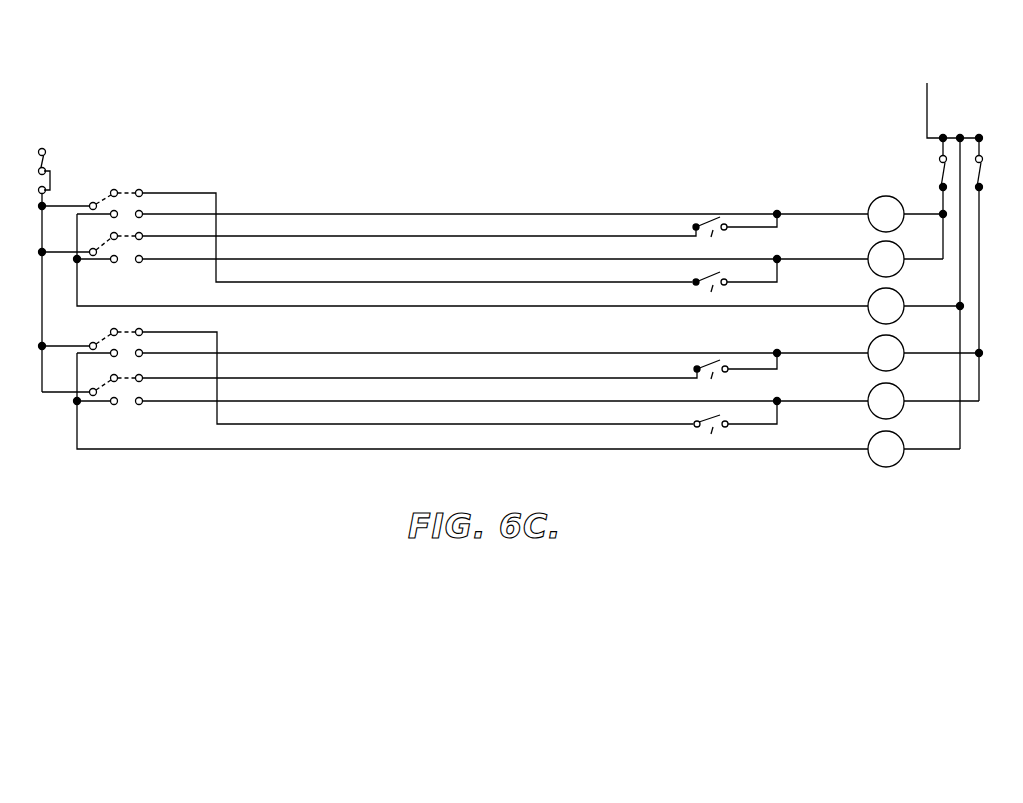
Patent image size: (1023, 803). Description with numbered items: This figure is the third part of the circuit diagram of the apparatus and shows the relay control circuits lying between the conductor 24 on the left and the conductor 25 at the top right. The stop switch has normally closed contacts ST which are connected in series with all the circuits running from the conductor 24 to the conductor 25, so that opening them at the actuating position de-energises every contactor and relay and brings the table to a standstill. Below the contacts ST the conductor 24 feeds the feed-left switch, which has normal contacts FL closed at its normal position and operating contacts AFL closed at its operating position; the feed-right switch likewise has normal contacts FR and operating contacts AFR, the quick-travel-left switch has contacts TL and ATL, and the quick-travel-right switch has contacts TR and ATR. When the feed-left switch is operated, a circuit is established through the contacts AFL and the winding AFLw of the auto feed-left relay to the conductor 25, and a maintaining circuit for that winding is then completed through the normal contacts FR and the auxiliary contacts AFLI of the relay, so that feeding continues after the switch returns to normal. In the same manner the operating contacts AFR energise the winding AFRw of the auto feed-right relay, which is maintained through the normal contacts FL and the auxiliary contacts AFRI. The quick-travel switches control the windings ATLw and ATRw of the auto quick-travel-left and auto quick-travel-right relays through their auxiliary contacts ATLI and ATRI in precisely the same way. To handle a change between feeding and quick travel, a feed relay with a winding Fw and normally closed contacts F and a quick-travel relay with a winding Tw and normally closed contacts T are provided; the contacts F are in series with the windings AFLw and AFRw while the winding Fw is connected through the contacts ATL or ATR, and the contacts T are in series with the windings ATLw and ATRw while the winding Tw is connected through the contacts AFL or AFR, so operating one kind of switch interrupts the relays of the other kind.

The conductor 24 is at (41, 171).
The conductor 25 is at (952, 137).
The stop switch contacts ST is at (31, 163).
The normal contacts of feed-left switch FL is at (94, 192).
The operating contacts of feed-left switch AFL is at (110, 207).
The normal contacts of feed-right switch FR is at (94, 237).
The operating contacts of feed-right switch AFR is at (108, 252).
The normal contacts of quick-travel-left switch TL is at (94, 331).
The operating contacts of quick-travel-left switch ATL is at (110, 346).
The normal contacts of quick-travel-right switch TR is at (92, 378).
The operating contacts of quick-travel-right switch ATR is at (108, 394).
The auxiliary contacts of auto feed-left relay AFLI is at (736, 236).
The auxiliary contacts of auto feed-right relay AFRI is at (735, 281).
The auxiliary contacts of auto quick-travel-left relay ATLI is at (736, 373).
The auxiliary contacts of auto quick-travel-right relay ATRI is at (736, 424).
The winding of auto feed-left relay AFLw is at (883, 214).
The winding of auto feed-right relay AFRw is at (877, 259).
The winding of quick-travel relay Tw is at (906, 306).
The winding of auto quick-travel-left relay ATLw is at (902, 353).
The winding of auto quick-travel-right relay ATRw is at (896, 401).
The winding of feed relay Fw is at (899, 449).
The normally closed contacts of feed relay F is at (940, 175).
The normally closed contacts of quick-travel relay T is at (981, 173).